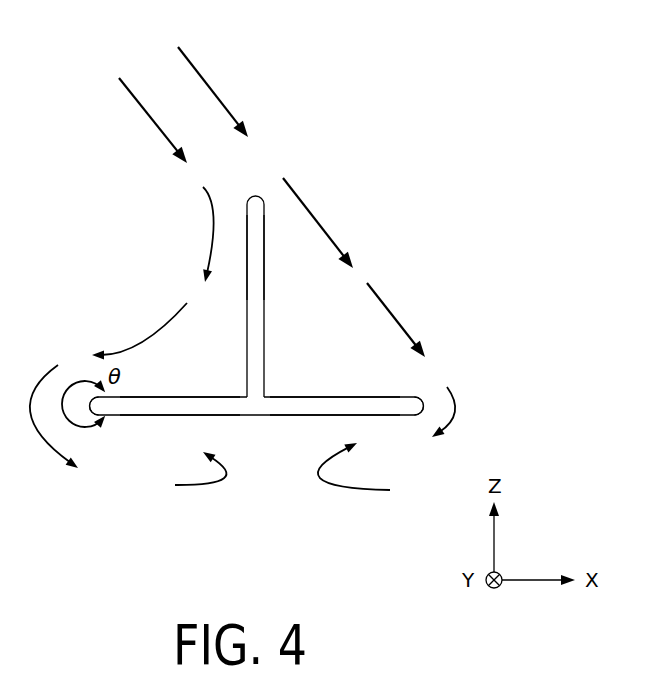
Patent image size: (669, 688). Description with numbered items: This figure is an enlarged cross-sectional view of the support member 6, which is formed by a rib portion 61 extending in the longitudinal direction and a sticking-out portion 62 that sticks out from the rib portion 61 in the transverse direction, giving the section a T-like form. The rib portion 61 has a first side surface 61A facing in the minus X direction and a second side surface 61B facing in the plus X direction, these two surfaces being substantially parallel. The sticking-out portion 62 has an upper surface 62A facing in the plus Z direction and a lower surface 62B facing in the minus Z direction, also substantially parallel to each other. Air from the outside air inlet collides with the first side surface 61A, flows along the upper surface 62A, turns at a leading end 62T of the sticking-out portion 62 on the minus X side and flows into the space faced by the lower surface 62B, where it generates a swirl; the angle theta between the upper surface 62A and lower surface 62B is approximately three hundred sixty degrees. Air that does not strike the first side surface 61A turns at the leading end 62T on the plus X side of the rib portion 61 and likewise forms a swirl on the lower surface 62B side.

The support member 6 is at (281, 331).
The rib portion 61 is at (273, 279).
The first side surface 61A is at (248, 240).
The second side surface 61B is at (264, 240).
The sticking-out portion 62 is at (281, 407).
The upper surface 62A is at (182, 397).
The lower surface 62B is at (148, 415).
The leading end 62T is at (77, 397).